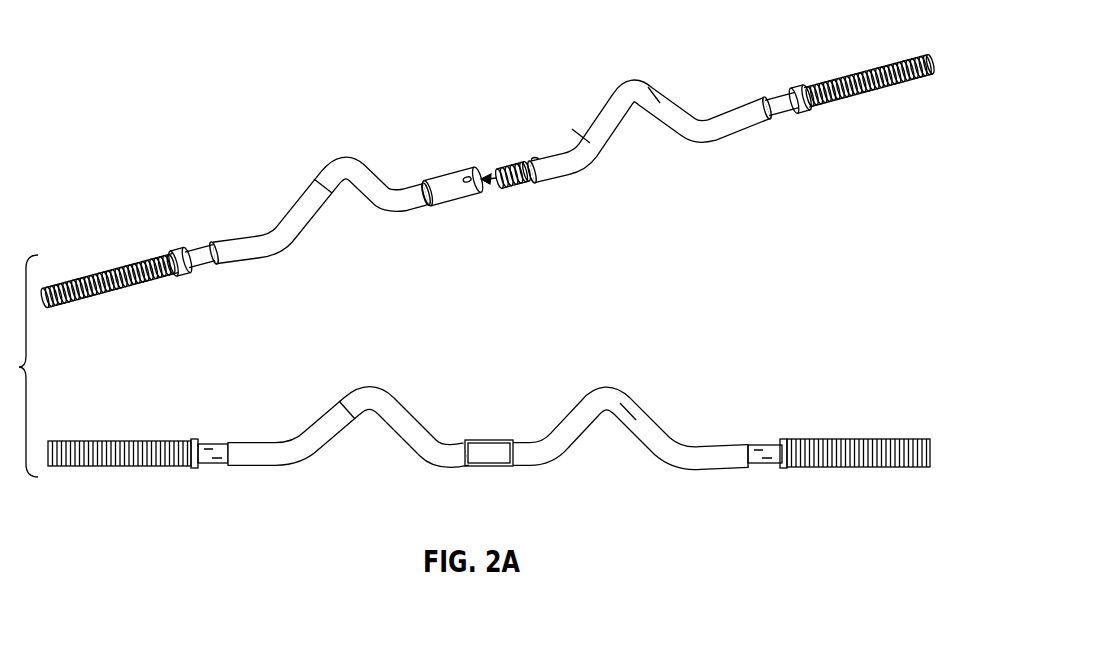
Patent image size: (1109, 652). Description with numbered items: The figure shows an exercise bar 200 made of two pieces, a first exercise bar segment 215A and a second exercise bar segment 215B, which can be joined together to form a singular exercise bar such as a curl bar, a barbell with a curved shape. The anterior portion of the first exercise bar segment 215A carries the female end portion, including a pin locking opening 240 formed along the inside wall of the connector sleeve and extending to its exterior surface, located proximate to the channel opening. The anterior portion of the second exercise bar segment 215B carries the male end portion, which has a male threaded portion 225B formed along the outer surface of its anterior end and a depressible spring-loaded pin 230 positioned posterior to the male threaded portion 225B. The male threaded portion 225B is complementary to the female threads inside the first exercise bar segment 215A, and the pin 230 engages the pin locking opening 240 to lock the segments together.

The exercise bar 200 is at (191, 141).
The first exercise bar segment 215A is at (345, 156).
The second exercise bar segment 215B is at (609, 92).
The male threaded portion 225B is at (518, 187).
The spring-loaded pin 230 is at (534, 157).
The pin locking opening 240 is at (467, 174).